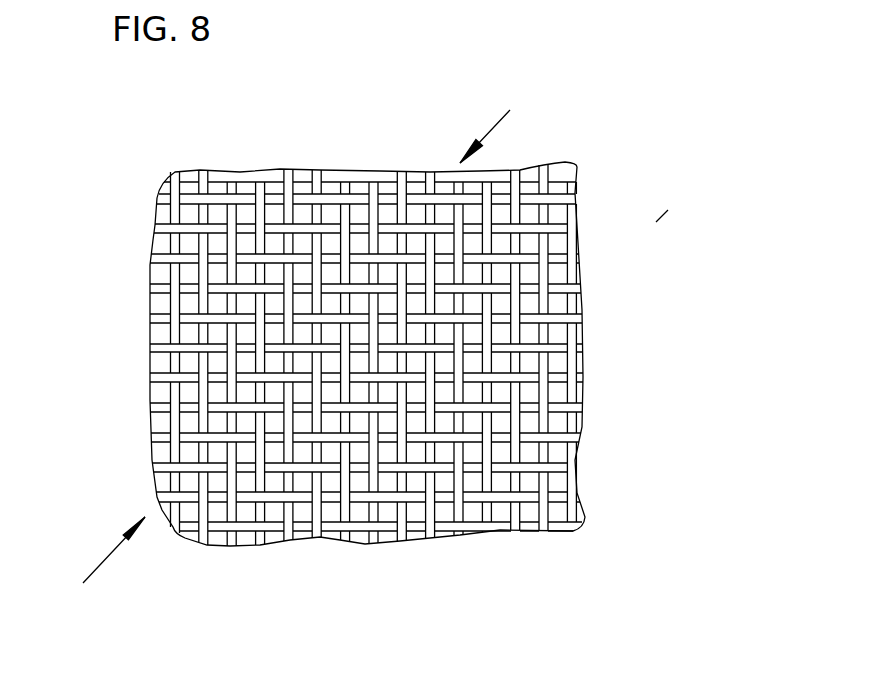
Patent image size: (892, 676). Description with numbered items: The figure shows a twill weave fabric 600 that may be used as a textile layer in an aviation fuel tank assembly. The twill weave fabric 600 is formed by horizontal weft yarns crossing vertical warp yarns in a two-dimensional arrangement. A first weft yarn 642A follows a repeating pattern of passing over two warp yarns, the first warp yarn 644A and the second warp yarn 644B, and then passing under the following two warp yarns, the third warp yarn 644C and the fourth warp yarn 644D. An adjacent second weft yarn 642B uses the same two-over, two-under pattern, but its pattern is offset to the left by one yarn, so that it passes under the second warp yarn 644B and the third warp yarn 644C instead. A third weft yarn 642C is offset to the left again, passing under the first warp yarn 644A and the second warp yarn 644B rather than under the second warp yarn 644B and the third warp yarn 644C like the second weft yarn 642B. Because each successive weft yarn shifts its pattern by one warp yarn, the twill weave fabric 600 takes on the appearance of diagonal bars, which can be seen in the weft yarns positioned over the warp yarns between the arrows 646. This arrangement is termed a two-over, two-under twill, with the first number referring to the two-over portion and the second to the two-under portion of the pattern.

The twill weave fabric 600 is at (656, 222).
The first weft yarn 642A is at (157, 227).
The second weft yarn 642B is at (157, 260).
The third weft yarn 642C is at (157, 290).
The first warp yarn 644A is at (168, 176).
The second warp yarn 644B is at (198, 170).
The third warp yarn 644C is at (242, 170).
The fourth warp yarn 644D is at (262, 180).
The arrows 646 is at (496, 125).